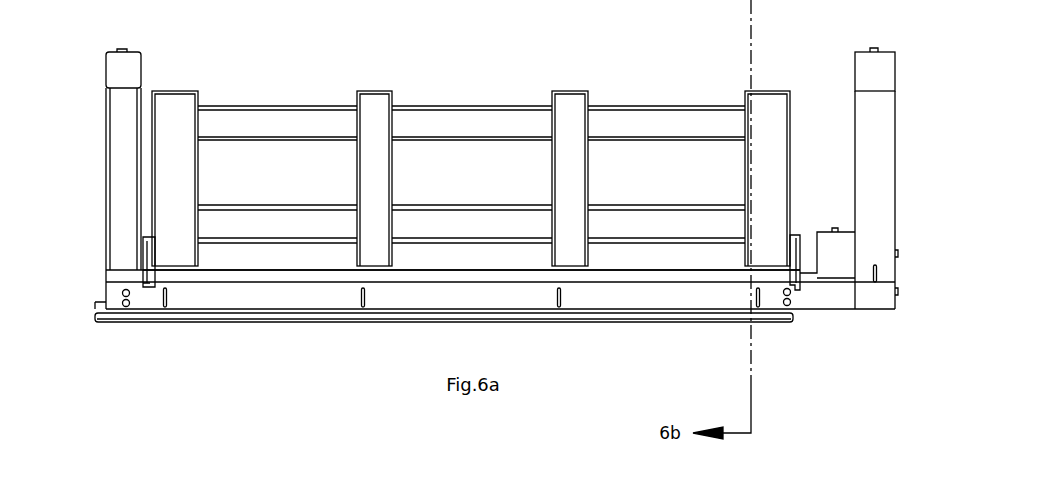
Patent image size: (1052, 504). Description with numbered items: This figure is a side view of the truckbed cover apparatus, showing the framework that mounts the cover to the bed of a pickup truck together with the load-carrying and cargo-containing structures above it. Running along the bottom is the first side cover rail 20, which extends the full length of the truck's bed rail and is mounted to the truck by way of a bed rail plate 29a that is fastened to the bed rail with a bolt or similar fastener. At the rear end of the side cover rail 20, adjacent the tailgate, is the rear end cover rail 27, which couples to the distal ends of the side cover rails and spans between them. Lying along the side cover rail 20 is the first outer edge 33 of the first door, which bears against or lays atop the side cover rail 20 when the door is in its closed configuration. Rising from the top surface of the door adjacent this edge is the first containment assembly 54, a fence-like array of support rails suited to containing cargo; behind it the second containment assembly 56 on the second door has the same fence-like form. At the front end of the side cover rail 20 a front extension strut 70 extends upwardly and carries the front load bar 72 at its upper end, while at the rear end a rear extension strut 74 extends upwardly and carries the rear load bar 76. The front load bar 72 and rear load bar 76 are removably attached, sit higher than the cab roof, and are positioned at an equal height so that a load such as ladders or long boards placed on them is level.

The first side cover rail 20 is at (397, 298).
The rear end cover rail 27 is at (837, 243).
The bed rail plate 29a is at (611, 323).
The first outer edge 33 is at (223, 273).
The first containment assembly 54 is at (471, 135).
The second containment assembly 56 is at (470, 120).
The front extension strut 70 is at (122, 174).
The front load bar 72 is at (105, 62).
The rear extension strut 74 is at (878, 150).
The rear load bar 76 is at (878, 70).